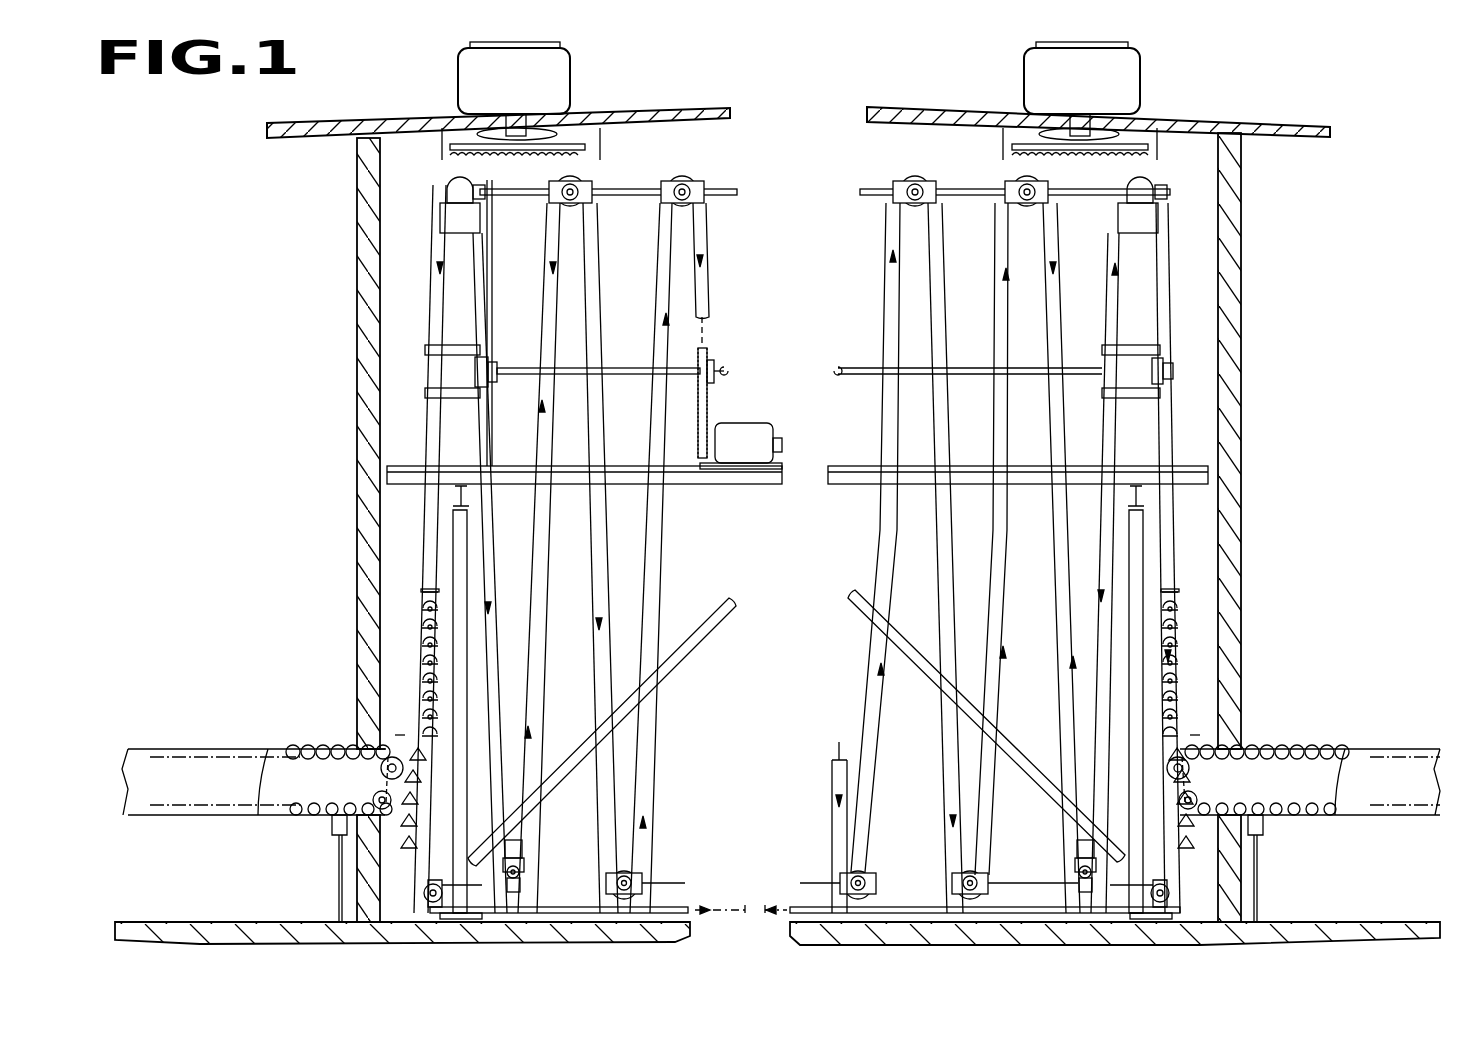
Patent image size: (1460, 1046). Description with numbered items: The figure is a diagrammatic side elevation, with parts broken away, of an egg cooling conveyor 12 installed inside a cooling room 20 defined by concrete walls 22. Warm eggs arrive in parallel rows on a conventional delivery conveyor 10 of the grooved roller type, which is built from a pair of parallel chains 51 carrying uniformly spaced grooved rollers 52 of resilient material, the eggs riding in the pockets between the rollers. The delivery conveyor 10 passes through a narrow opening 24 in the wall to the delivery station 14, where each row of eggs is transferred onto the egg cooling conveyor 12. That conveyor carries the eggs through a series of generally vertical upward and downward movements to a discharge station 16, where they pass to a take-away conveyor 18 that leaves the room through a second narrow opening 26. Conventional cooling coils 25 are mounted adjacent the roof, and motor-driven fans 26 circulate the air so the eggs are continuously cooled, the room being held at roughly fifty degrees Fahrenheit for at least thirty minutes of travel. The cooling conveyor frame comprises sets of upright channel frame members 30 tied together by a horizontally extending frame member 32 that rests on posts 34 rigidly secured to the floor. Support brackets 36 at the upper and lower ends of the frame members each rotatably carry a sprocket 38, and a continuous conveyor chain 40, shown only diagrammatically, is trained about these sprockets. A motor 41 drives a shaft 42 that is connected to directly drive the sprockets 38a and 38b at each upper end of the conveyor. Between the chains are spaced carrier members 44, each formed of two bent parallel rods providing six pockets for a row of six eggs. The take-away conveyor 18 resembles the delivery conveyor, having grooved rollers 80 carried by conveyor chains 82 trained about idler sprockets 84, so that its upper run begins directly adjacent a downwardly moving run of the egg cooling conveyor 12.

The delivery conveyor 10 is at (238, 745).
The egg cooling conveyor 12 is at (418, 626).
The delivery station 14 is at (395, 730).
The discharge station 16 is at (1195, 724).
The take-away conveyor 18 is at (1342, 748).
The cooling room 20 is at (355, 318).
The concrete walls 22 is at (355, 440).
The narrow opening 24 is at (360, 748).
The cooling coils 25 is at (598, 146).
The motor-driven fan 26 is at (530, 90).
The upright channel frame members 30 is at (477, 425).
The horizontally extending frame member 32 is at (702, 477).
The posts 34 is at (457, 527).
The support brackets 36 is at (591, 201).
The sprocket 38 is at (674, 188).
The sprocket 38a is at (452, 178).
The sprocket 38b is at (1148, 178).
The conveyor chain 40 is at (520, 723).
The motor 41 is at (755, 426).
The shaft 42 is at (835, 370).
The carrier members 44 is at (418, 630).
The parallel chains 51 is at (265, 757).
The grooved rollers 52 is at (290, 752).
The grooved rollers 80 is at (1288, 752).
The conveyor chains 82 is at (1350, 757).
The idler sprockets 84 is at (1192, 773).